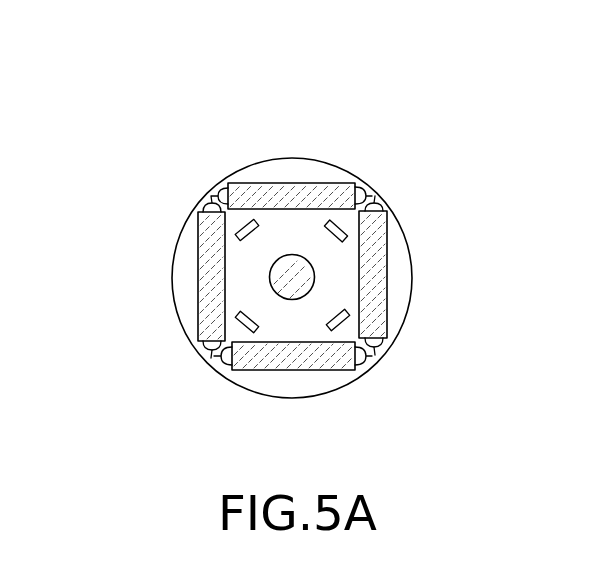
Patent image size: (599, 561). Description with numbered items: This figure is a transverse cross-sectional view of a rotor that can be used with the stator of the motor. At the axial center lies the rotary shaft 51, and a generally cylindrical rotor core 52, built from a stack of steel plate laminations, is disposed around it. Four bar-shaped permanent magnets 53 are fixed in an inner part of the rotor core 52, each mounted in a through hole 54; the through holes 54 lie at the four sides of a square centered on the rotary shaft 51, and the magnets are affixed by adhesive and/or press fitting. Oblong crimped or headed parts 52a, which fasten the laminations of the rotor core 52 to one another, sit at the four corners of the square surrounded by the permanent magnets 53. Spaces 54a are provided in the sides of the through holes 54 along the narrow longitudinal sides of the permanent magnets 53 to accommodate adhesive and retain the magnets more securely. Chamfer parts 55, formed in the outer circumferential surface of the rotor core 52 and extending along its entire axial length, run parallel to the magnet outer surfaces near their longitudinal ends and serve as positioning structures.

The rotary shaft 51 is at (300, 268).
The rotor core 52 is at (298, 195).
The crimped part 52a is at (250, 224).
The permanent magnet 53 is at (312, 193).
The through hole 54 is at (262, 180).
The space 54a is at (212, 203).
The chamfer part 55 is at (230, 180).